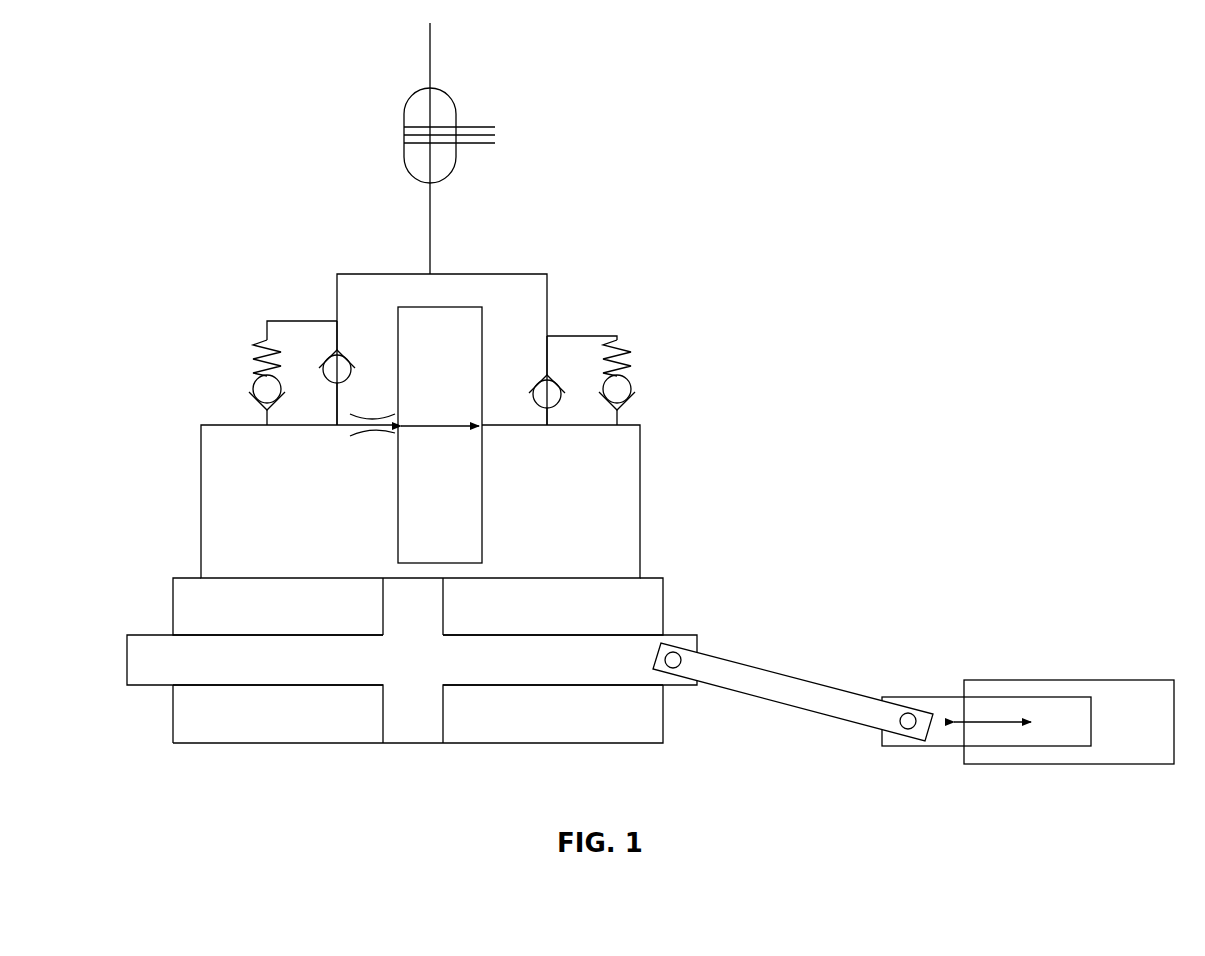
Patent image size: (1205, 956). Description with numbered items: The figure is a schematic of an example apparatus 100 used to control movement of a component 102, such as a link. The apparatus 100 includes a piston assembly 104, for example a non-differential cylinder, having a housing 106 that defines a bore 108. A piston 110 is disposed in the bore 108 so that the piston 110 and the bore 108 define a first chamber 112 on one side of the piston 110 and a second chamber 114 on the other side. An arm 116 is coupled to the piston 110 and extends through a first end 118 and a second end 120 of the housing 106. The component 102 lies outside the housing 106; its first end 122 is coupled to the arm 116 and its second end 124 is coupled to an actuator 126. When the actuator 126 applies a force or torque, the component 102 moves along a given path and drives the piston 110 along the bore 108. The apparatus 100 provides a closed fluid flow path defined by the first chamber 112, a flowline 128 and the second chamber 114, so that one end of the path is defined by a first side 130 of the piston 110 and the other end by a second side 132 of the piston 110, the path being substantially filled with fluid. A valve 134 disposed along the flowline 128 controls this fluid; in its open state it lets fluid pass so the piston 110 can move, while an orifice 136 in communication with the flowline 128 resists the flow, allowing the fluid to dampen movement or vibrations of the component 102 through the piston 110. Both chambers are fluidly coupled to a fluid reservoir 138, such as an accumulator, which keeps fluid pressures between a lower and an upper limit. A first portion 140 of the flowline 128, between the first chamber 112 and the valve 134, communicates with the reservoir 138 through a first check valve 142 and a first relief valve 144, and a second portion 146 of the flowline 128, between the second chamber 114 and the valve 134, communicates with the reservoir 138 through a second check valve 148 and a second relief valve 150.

The apparatus 100 is at (602, 127).
The component 102 is at (810, 690).
The piston assembly 104 is at (661, 577).
The housing 106 is at (173, 600).
The bore 108 is at (312, 727).
The piston 110 is at (417, 705).
The first chamber 112 is at (278, 714).
The second chamber 114 is at (553, 714).
The arm 116 is at (613, 663).
The first end 118 is at (173, 722).
The second end 120 is at (663, 720).
The first end 122 is at (673, 652).
The second end 124 is at (908, 729).
The actuator 126 is at (1040, 679).
The flowline 128 is at (502, 434).
The first side 130 is at (381, 598).
The second side 132 is at (443, 600).
The valve 134 is at (397, 507).
The orifice 136 is at (380, 433).
The fluid reservoir 138 is at (408, 172).
The first portion 140 is at (201, 507).
The first check valve 142 is at (337, 358).
The first relief valve 144 is at (258, 387).
The second portion 146 is at (641, 470).
The second check valve 148 is at (548, 378).
The second relief valve 150 is at (622, 385).